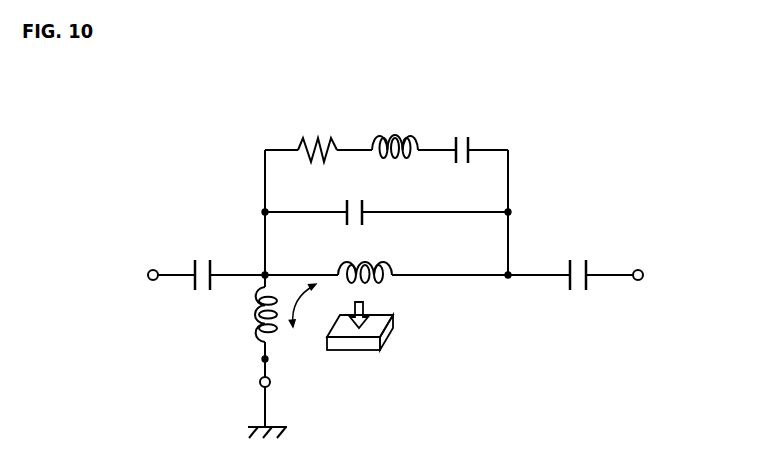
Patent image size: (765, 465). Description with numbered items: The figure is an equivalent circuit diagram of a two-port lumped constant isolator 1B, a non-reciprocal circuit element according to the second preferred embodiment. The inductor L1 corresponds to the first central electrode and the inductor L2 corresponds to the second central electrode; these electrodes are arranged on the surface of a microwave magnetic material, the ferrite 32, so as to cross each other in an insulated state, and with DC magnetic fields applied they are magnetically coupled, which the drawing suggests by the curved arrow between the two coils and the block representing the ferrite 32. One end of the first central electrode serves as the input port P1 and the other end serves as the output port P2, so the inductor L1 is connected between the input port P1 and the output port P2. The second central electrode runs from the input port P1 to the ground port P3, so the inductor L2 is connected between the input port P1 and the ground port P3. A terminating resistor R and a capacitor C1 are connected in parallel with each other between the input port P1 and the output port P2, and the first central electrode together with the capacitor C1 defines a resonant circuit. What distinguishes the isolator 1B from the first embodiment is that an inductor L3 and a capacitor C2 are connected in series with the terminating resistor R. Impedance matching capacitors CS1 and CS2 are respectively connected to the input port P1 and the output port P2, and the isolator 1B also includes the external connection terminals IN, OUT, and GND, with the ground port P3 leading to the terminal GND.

The two-port lumped constant isolator 1B is at (411, 178).
The ferrite 32 is at (353, 350).
The terminating resistor R is at (317, 132).
The inductor L1 is at (365, 259).
The inductor L2 is at (247, 314).
The inductor L3 is at (395, 130).
The capacitor C1 is at (355, 196).
The capacitor C2 is at (462, 133).
The impedance matching capacitor CS1 is at (199, 259).
The impedance matching capacitor CS2 is at (591, 259).
The input port P1 is at (264, 273).
The output port P2 is at (509, 273).
The ground port P3 is at (267, 359).
The external connection terminal IN is at (155, 259).
The external connection terminal OUT is at (652, 258).
The external connection terminal GND is at (283, 407).